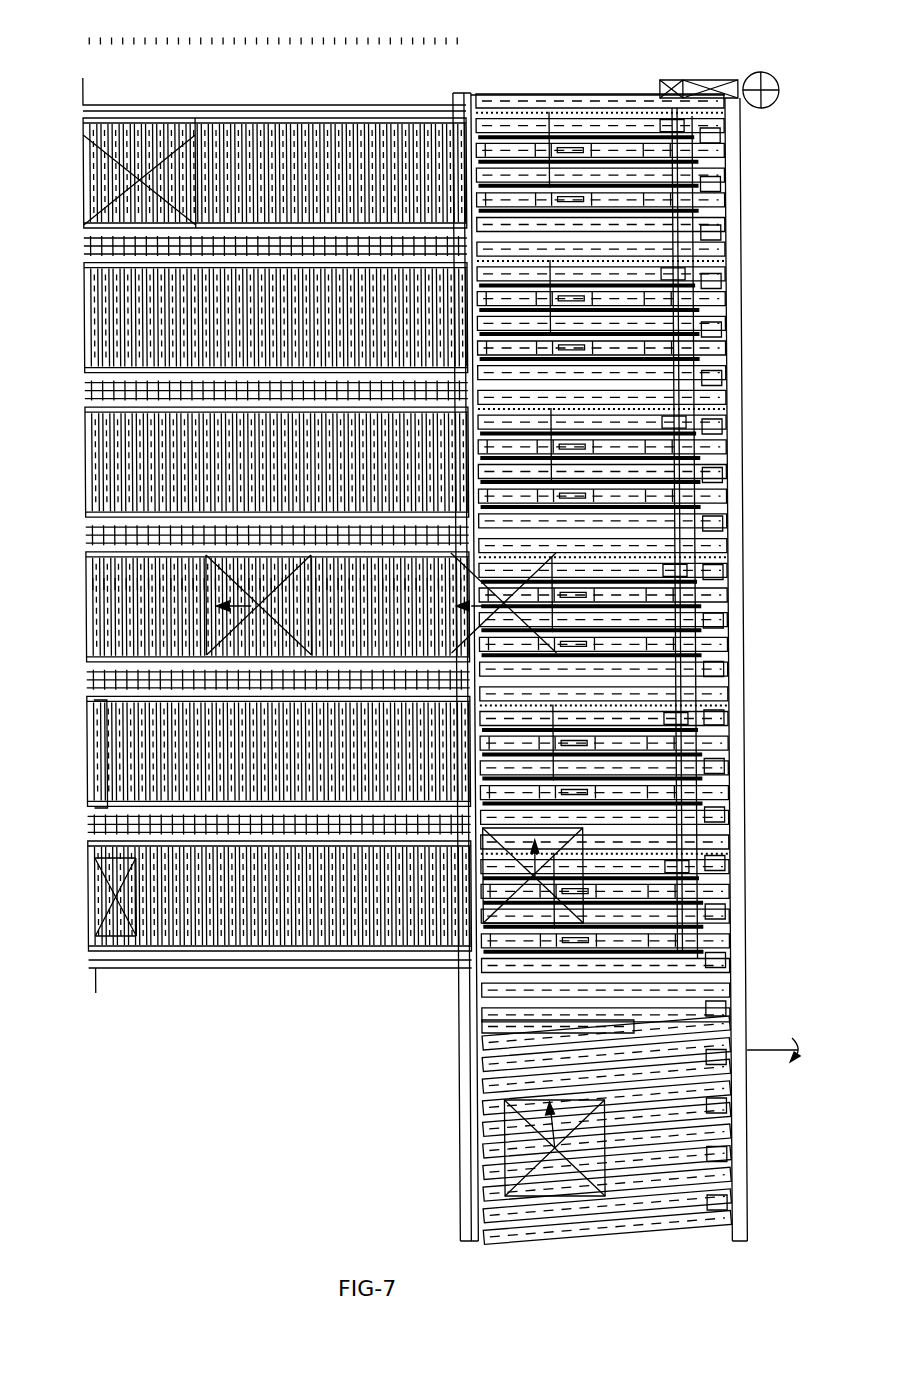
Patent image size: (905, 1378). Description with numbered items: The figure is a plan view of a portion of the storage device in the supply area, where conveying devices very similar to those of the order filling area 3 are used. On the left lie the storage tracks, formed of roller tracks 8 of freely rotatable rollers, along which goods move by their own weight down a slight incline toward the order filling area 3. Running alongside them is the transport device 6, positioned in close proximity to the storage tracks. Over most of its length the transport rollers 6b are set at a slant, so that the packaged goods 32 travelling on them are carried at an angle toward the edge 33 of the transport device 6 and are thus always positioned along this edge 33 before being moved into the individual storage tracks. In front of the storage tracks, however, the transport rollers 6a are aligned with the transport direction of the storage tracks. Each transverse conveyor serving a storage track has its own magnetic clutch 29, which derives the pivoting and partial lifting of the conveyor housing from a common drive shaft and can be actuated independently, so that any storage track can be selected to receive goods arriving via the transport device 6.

The order filling area 3 is at (278, 554).
The transport device 6 is at (602, 652).
The transport rollers 6a is at (700, 1000).
The transport rollers 6b is at (598, 1208).
The roller tracks 8 is at (262, 150).
The magnetic clutch 29 is at (681, 267).
The packaged goods 32 is at (535, 1177).
The edge 33 is at (459, 1088).